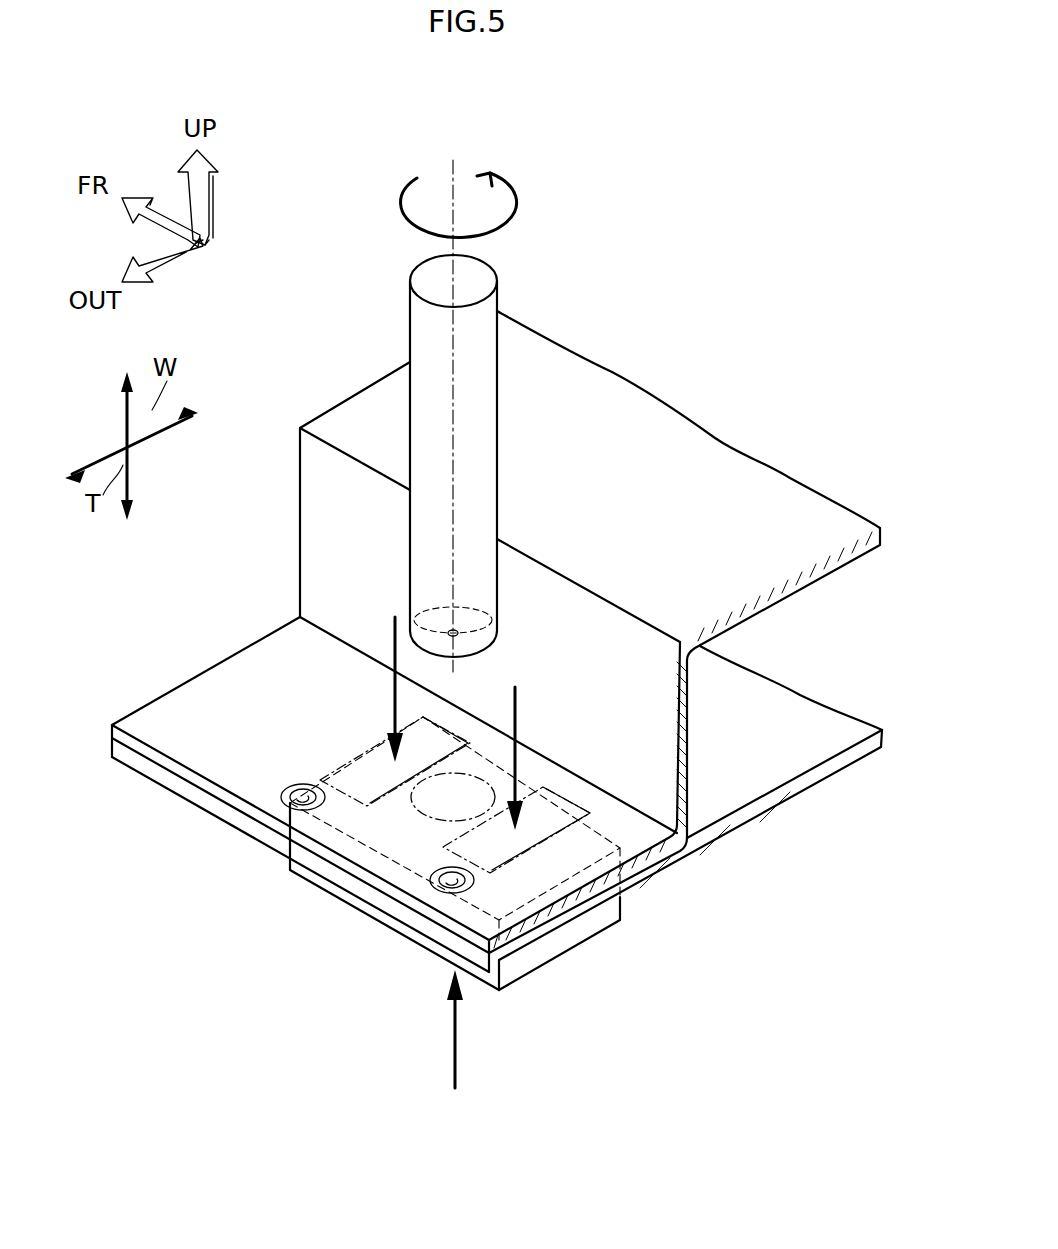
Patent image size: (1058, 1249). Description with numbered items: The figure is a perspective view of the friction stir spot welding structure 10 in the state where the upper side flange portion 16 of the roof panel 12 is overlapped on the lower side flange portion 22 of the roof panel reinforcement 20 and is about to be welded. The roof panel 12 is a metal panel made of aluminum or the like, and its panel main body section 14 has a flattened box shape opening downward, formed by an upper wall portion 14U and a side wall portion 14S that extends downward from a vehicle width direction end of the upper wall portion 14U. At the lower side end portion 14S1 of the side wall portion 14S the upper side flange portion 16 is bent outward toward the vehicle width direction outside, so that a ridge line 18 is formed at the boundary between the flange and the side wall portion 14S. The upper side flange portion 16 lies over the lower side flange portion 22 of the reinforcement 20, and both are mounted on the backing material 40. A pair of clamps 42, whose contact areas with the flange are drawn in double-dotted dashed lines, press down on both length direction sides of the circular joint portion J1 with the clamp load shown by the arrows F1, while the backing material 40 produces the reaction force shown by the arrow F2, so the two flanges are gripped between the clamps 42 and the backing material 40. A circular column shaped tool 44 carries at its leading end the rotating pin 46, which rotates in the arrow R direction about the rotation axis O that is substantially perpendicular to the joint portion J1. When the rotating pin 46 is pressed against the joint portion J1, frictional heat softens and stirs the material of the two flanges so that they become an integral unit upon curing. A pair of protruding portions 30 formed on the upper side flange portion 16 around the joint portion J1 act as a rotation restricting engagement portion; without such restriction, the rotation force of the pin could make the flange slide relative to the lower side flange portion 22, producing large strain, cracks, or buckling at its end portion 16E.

The friction stir spot welding structure 10 is at (665, 1003).
The roof panel 12 is at (740, 295).
The panel main body section 14 is at (705, 460).
The upper wall portion 14U is at (788, 498).
The side wall portion 14S is at (326, 520).
The lower side end portion 14S1 is at (326, 568).
The upper side flange portion 16 is at (203, 697).
The end portion of the upper side flange portion 16E is at (363, 860).
The ridge line 18 is at (330, 636).
The roof panel reinforcement 20 is at (795, 715).
The lower side flange portion 22 is at (648, 877).
The protruding portion 30 is at (298, 800).
The backing material 40 is at (547, 967).
The clamp 42 is at (455, 732).
The tool 44 is at (483, 405).
The rotating pin 46 is at (499, 605).
The joint portion J1 is at (445, 815).
The rotation axis O is at (453, 192).
The rotation direction R is at (516, 230).
The pressing force of the clamps F1 is at (393, 690).
The reaction force of the backing material F2 is at (452, 1050).